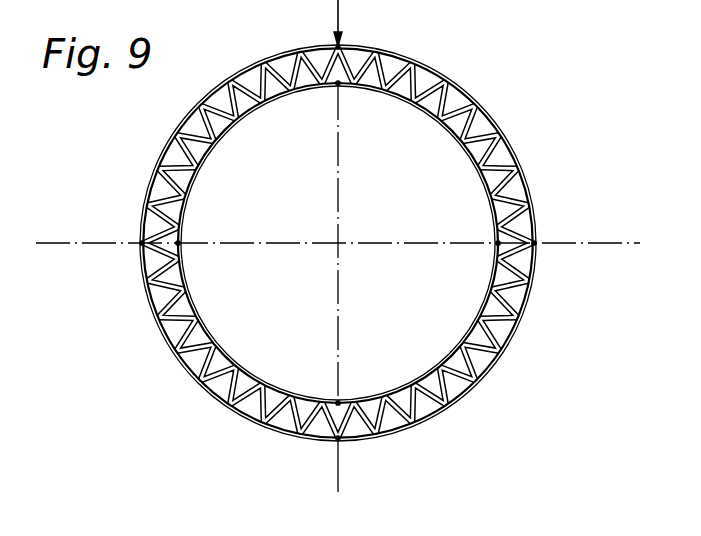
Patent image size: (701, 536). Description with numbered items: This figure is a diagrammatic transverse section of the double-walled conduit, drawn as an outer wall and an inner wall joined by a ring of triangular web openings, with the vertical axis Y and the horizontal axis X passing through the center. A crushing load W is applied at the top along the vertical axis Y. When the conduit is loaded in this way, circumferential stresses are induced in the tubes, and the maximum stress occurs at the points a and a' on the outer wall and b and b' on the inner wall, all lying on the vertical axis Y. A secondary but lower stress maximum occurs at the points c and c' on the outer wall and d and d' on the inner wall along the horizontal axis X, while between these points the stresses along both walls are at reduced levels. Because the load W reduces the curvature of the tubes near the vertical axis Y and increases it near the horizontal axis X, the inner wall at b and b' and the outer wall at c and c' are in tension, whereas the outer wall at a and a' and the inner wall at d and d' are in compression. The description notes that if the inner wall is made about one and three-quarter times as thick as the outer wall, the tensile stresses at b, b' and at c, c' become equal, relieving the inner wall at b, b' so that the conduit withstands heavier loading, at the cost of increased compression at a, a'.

The load W is at (340, 10).
The horizontal axis X is at (338, 246).
The vertical axis Y is at (335, 300).
The outer wall point on vertical axis a is at (359, 37).
The inner wall point on vertical axis b is at (356, 103).
The outer wall point on horizontal axis c is at (548, 230).
The inner wall point on horizontal axis d is at (484, 234).
The outer wall point on vertical axis a' is at (352, 456).
The inner wall point on vertical axis b' is at (353, 389).
The outer wall point on horizontal axis c' is at (124, 230).
The inner wall point on horizontal axis d' is at (193, 234).